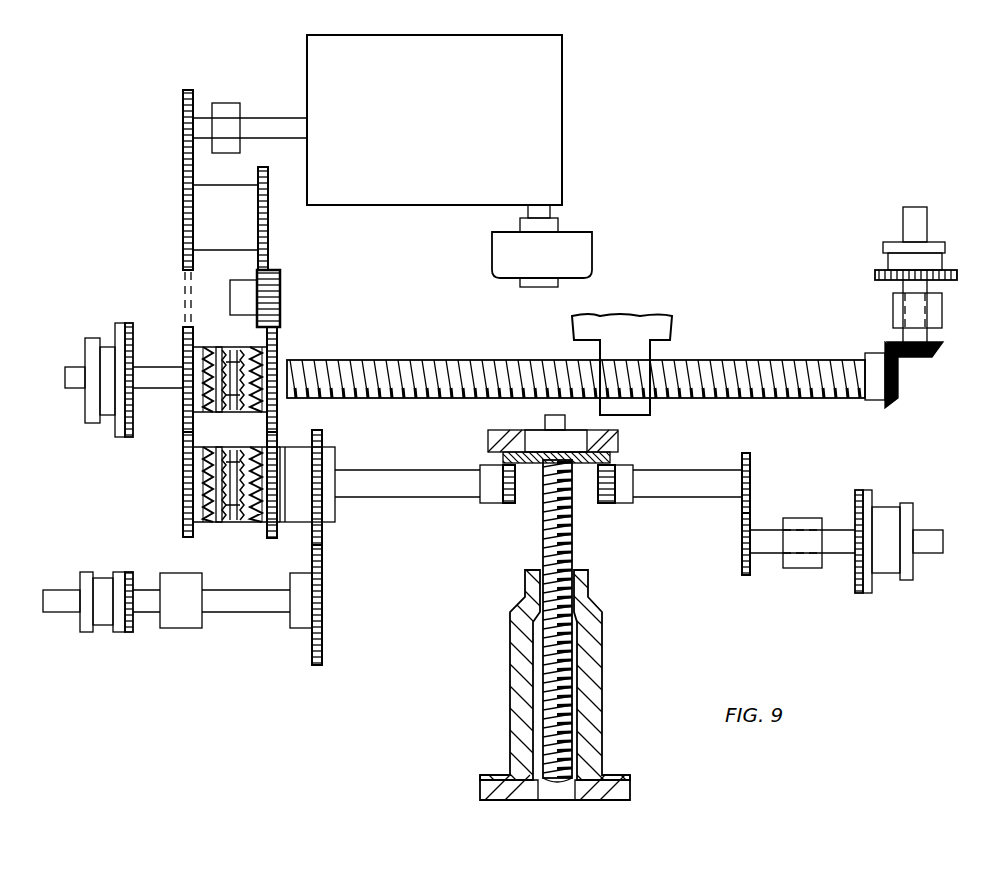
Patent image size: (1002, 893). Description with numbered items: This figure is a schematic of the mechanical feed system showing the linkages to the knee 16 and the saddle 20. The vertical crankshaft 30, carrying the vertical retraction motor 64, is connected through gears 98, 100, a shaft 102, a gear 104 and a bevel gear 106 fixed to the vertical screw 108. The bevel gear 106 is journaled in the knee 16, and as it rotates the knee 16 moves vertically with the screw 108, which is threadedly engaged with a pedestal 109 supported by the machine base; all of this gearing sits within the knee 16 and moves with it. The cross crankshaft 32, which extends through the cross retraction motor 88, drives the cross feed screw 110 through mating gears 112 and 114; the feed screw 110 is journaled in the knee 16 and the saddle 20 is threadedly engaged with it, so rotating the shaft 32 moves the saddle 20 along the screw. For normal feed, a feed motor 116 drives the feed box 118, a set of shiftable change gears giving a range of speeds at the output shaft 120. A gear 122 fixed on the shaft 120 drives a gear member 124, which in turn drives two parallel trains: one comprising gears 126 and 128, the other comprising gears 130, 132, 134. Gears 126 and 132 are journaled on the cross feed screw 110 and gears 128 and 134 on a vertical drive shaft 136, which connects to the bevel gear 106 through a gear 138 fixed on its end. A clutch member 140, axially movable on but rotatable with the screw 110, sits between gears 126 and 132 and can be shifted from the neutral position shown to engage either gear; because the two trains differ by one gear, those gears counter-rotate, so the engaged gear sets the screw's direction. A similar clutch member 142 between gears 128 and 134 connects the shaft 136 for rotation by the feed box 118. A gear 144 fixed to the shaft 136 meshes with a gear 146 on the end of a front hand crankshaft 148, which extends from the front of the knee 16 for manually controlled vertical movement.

The knee 16 is at (618, 440).
The saddle 20 is at (636, 348).
The vertical crankshaft 30 is at (930, 531).
The cross crankshaft 32 is at (930, 182).
The vertical retraction motor 64 is at (812, 570).
The cross retraction motor 88 is at (942, 315).
The gear 98 is at (742, 570).
The gear 100 is at (750, 462).
The shaft 102 is at (710, 497).
The gear 104 is at (624, 505).
The bevel gear 106 is at (610, 458).
The vertical screw 108 is at (543, 522).
The pedestal 109 is at (603, 650).
The cross feed screw 110 is at (460, 358).
The gear 112 is at (940, 349).
The gear 114 is at (898, 392).
The feed motor 116 is at (558, 266).
The feed box 118 is at (462, 107).
The output shaft 120 is at (268, 117).
The gear 122 is at (183, 98).
The gear member 124 is at (240, 226).
The gear 126 is at (183, 334).
The gear 128 is at (183, 458).
The gear 130 is at (280, 290).
The gear 132 is at (277, 338).
The gear 134 is at (270, 540).
The vertical drive shaft 136 is at (380, 484).
The gear 138 is at (505, 505).
The clutch member 140 is at (240, 347).
The clutch member 142 is at (247, 447).
The gear 144 is at (322, 436).
The gear 146 is at (322, 556).
The front hand crankshaft 148 is at (62, 590).